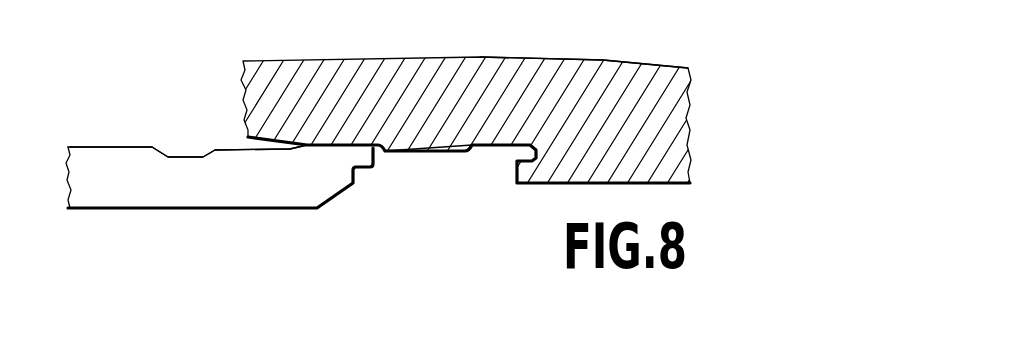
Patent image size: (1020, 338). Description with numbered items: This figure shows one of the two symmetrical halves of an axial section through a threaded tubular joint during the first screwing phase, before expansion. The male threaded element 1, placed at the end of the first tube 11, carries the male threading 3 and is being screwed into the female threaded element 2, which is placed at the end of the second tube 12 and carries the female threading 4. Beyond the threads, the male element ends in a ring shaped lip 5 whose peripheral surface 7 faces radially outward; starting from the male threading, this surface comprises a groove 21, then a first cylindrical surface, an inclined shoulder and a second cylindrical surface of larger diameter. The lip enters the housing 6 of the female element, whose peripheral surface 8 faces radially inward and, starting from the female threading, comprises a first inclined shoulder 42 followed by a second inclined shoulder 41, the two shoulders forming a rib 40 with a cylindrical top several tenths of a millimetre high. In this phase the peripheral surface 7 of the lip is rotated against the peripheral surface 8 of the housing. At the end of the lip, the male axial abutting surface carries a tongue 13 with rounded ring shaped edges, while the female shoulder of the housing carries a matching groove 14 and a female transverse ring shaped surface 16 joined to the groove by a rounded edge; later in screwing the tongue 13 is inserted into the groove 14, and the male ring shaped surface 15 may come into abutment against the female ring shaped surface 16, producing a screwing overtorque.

The male threaded element 1 is at (170, 209).
The female threaded element 2 is at (433, 60).
The male threading 3 is at (95, 146).
The female threading 4 is at (273, 148).
The ring shaped lip 5 is at (331, 184).
The housing 6 is at (493, 178).
The peripheral surface of the lip 7 is at (210, 139).
The peripheral surface of the housing 8 is at (427, 180).
The first tube 11 is at (90, 200).
The second tube 12 is at (635, 75).
The tongue 13 is at (364, 155).
The groove 14 is at (530, 155).
The male ring shaped surface 15 is at (345, 165).
The female transverse ring shaped surface 16 is at (508, 184).
The groove 21 is at (182, 157).
The rib 40 is at (415, 151).
The second inclined shoulder 41 is at (456, 151).
The first inclined shoulder 42 is at (382, 151).